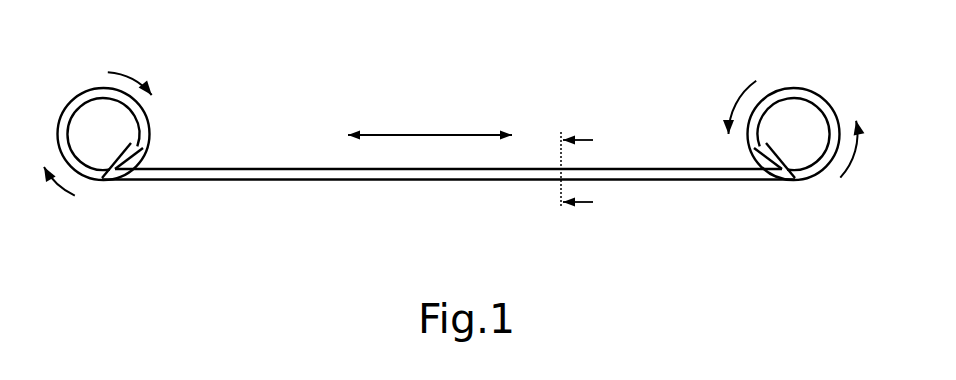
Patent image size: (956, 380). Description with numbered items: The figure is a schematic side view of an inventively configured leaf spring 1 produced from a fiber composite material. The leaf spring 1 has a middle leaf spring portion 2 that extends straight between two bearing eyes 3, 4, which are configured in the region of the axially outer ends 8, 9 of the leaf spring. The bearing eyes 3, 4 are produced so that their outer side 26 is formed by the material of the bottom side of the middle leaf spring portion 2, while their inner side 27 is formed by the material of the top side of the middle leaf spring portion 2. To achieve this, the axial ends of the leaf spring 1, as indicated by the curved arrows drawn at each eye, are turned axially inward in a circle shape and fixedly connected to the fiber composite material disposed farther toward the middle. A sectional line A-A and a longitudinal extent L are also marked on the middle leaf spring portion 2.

The leaf spring 1 is at (557, 82).
The middle leaf spring portion 2 is at (314, 168).
The bearing eye 3 is at (815, 100).
The bearing eye 4 is at (73, 108).
The axially outer end 8 is at (133, 197).
The axially outer end 9 is at (752, 192).
The outer side 26 is at (787, 88).
The inner side 27 is at (126, 148).